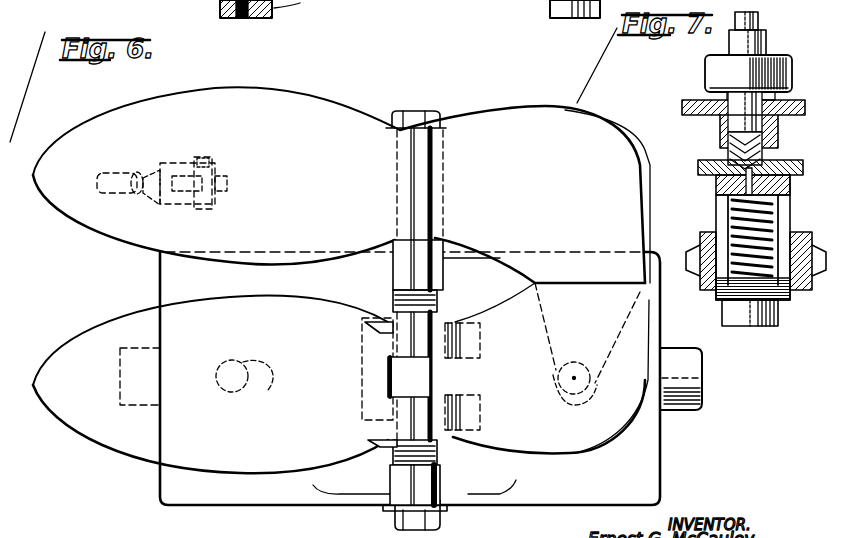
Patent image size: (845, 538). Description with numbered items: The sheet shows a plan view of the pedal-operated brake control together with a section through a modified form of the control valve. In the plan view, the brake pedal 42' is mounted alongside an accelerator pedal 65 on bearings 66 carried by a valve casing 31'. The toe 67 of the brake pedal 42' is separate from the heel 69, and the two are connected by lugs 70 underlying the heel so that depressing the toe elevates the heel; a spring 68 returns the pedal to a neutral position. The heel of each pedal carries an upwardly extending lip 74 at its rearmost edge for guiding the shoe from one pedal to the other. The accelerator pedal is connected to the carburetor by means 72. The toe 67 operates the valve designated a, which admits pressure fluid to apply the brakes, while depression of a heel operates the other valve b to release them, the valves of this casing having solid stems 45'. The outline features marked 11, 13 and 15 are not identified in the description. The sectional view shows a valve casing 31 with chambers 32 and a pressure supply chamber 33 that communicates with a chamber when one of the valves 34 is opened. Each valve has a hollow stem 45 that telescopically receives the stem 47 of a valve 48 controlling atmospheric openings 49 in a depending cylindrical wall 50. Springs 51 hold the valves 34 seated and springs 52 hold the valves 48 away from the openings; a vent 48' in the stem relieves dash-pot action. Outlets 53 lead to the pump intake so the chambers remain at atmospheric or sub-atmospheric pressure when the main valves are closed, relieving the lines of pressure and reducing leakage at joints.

In FIG. 6, the upper plate left lobe 11 is at (318, 98).
In FIG. 6, the upper plate right lobe 13 is at (513, 115).
In FIG. 6, the lower plate right lobe 15 is at (558, 328).
In FIG. 7, the valve casing 31 is at (725, 107).
In FIG. 6, the valve casing 31' is at (431, 391).
In FIG. 7, the chambers 32 is at (700, 242).
In FIG. 7, the pressure supply chamber 33 is at (712, 125).
In FIG. 7, the valves 34 is at (728, 158).
In FIG. 6, the brake pedal 42' is at (210, 381).
In FIG. 7, the stems 45 is at (752, 65).
In FIG. 6, the solid stems 45' is at (255, 396).
In FIG. 7, the stems 47 is at (758, 18).
In FIG. 7, the valves 48 is at (799, 188).
In FIG. 7, the vent 48' is at (753, 158).
In FIG. 7, the atmospheric openings 49 is at (718, 215).
In FIG. 7, the depending cylindrical wall 50 is at (716, 186).
In FIG. 7, the springs 51 is at (716, 286).
In FIG. 7, the springs 52 is at (730, 201).
In FIG. 7, the outlets 53 is at (724, 313).
In FIG. 6, the accelerator pedal 65 is at (88, 212).
In FIG. 6, the bearings 66 is at (438, 278).
In FIG. 6, the toe 67 is at (274, 465).
In FIG. 6, the spring 68 is at (390, 446).
In FIG. 6, the heel 69 is at (548, 448).
In FIG. 6, the lugs 70 is at (462, 437).
In FIG. 6, the connecting means 72 is at (170, 165).
In FIG. 6, the lip 74 is at (638, 139).
In FIG. 6, the valve a is at (258, 352).
In FIG. 6, the valve b is at (574, 362).